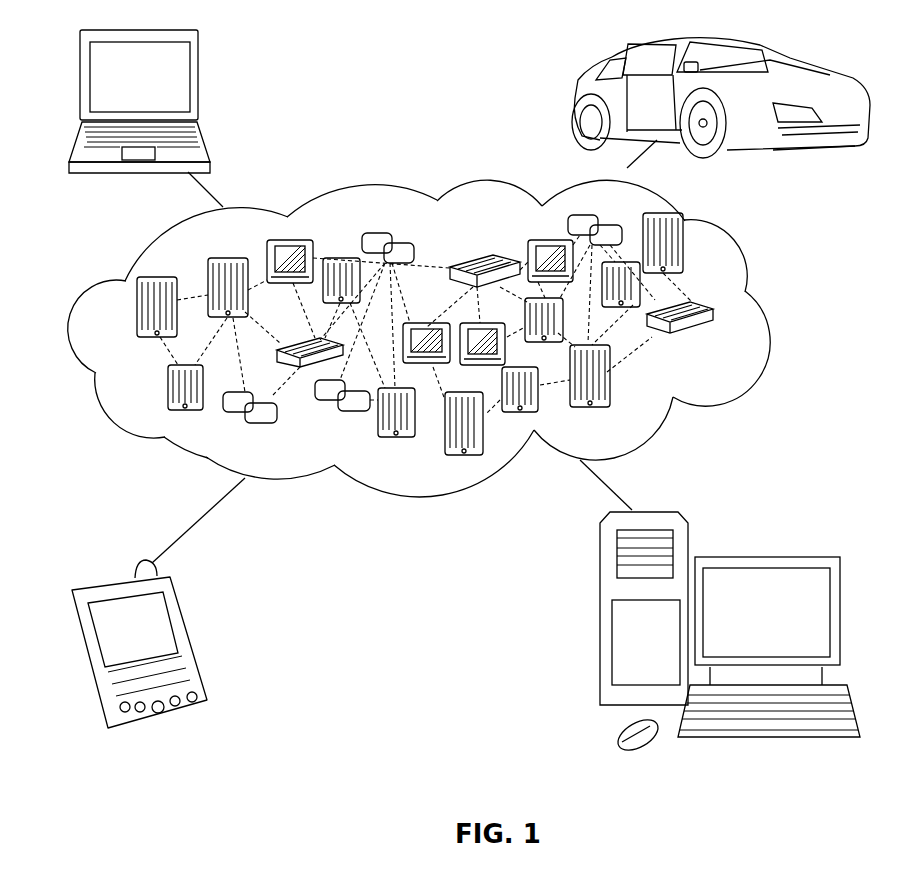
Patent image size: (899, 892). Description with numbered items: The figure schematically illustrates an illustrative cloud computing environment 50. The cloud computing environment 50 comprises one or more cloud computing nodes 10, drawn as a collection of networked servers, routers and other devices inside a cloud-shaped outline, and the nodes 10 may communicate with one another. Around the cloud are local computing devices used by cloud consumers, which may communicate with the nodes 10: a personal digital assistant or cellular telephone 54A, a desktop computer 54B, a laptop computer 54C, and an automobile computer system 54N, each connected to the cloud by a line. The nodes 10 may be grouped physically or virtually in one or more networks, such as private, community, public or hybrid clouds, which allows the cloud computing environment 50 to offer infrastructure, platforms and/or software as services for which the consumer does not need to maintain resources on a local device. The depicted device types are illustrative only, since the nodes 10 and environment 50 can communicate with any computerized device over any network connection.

The cloud computing node 10 is at (712, 340).
The cloud computing environment 50 is at (767, 314).
The personal digital assistant or cellular telephone 54A is at (190, 640).
The desktop computer 54B is at (765, 557).
The laptop computer 54C is at (200, 85).
The automobile computer system 54N is at (580, 100).